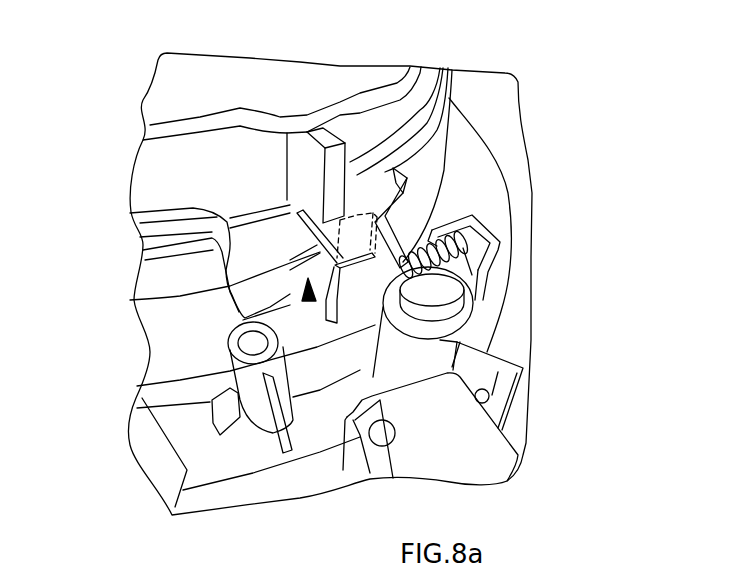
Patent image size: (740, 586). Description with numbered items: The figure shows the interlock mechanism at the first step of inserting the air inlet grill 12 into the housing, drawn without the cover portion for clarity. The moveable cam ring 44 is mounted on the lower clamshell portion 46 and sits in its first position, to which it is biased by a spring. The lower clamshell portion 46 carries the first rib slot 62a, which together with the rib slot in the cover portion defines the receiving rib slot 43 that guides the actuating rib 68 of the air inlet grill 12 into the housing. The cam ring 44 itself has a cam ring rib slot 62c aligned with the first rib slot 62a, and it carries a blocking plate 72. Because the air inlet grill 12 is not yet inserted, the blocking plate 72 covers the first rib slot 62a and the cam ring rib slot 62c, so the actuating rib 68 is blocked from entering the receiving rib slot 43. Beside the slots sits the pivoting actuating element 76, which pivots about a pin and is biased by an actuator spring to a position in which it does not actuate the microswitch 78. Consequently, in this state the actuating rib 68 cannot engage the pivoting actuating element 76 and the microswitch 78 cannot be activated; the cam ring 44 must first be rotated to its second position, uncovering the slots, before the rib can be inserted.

The air inlet grill 12 is at (182, 93).
The receiving rib slot 43 is at (310, 300).
The moveable cam ring 44 is at (187, 277).
The lower clamshell portion 46 is at (240, 228).
The first rib slot 62a is at (180, 296).
The cam ring rib slot 62c is at (193, 210).
The actuating rib 68 is at (313, 170).
The blocking plate 72 is at (393, 190).
The pivoting actuating element 76 is at (487, 353).
The microswitch 78 is at (490, 397).